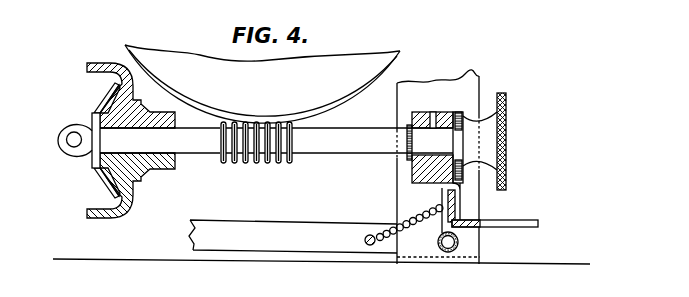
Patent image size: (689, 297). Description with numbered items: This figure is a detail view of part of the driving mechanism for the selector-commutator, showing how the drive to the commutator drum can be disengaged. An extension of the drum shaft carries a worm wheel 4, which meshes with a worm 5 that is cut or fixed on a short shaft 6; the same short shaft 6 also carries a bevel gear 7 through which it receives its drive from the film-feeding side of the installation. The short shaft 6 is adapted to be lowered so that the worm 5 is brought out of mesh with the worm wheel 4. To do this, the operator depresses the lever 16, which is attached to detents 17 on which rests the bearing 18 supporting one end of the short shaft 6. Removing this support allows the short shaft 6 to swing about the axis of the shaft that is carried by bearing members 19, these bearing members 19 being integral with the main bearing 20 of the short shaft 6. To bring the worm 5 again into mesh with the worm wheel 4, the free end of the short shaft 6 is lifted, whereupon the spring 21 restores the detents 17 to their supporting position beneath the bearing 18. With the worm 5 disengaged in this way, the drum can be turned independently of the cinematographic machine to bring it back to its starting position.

The worm wheel 4 is at (262, 84).
The worm 5 is at (292, 160).
The short shaft 6 is at (276, 141).
The bevel gear 7 is at (96, 179).
The lever 16 is at (505, 222).
The detents 17 is at (442, 191).
The bearing 18 is at (419, 112).
The bearing members 19 is at (58, 150).
The main bearing 20 is at (162, 170).
The spring 21 is at (413, 222).